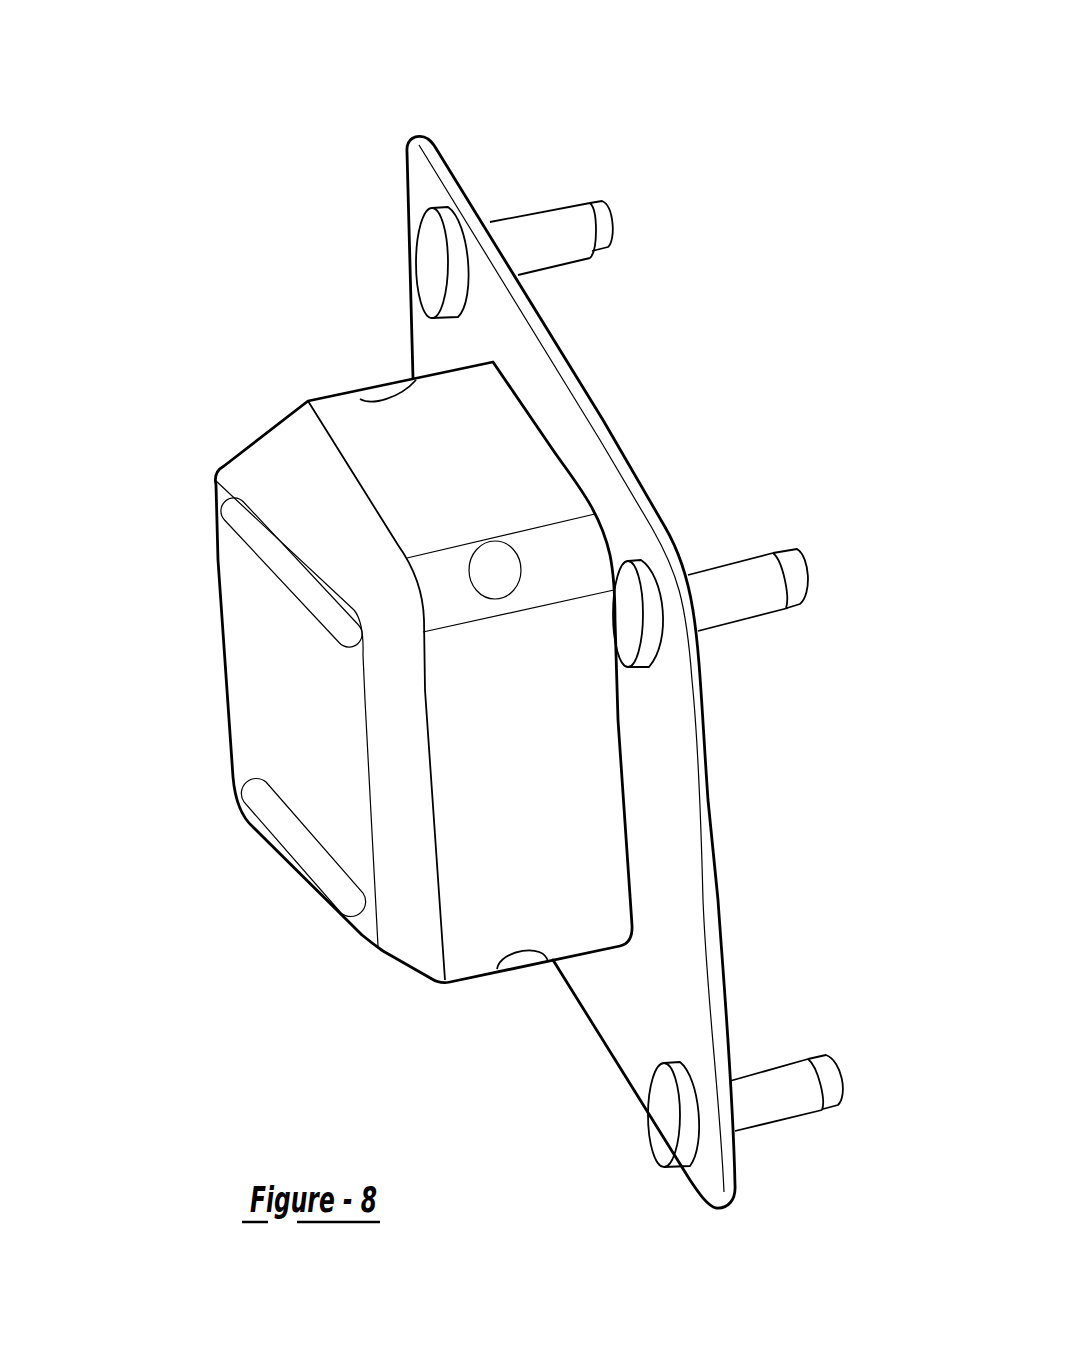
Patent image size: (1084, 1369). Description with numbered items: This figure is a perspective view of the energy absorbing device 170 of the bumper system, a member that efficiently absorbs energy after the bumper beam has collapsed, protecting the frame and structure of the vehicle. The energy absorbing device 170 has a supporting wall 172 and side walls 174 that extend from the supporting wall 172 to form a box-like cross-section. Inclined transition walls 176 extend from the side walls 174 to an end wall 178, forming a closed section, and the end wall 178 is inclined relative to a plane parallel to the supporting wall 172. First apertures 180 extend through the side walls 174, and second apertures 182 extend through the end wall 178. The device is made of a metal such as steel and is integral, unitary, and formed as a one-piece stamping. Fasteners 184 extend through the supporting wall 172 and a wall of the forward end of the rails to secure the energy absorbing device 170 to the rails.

The energy absorbing device 170 is at (428, 140).
The supporting wall 172 is at (673, 913).
The side walls 174 is at (503, 462).
The inclined transition walls 176 is at (293, 472).
The end wall 178 is at (248, 642).
The first apertures 180 is at (360, 400).
The second apertures 182 is at (292, 558).
The fasteners 184 is at (533, 230).